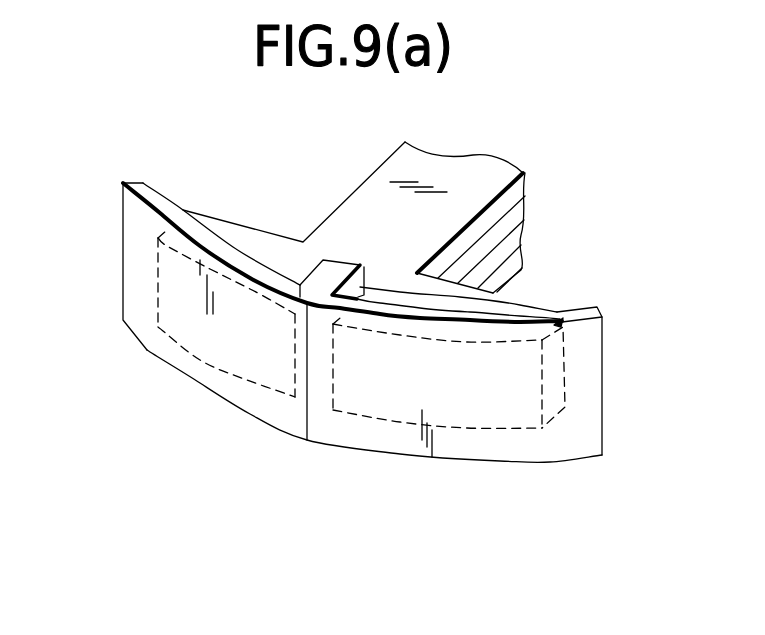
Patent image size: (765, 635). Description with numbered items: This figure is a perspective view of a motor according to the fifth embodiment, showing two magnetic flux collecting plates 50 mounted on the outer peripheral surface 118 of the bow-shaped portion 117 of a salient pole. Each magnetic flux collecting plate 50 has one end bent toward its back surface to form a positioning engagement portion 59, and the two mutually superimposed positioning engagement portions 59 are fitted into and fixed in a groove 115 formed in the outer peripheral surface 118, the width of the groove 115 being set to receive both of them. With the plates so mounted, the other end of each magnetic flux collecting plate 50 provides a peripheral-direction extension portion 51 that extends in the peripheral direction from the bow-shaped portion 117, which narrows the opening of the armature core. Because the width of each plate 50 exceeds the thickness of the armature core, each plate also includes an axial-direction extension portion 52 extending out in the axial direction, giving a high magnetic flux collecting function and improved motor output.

The magnetic flux collecting plate 50 is at (137, 344).
The peripheral-direction extension portion 51 is at (132, 265).
The axial-direction extension portion 52 is at (195, 378).
The positioning engagement portion 59 is at (339, 262).
The groove 115 is at (495, 293).
The bow-shaped portion 117 is at (263, 243).
The outer peripheral surface 118 is at (248, 378).